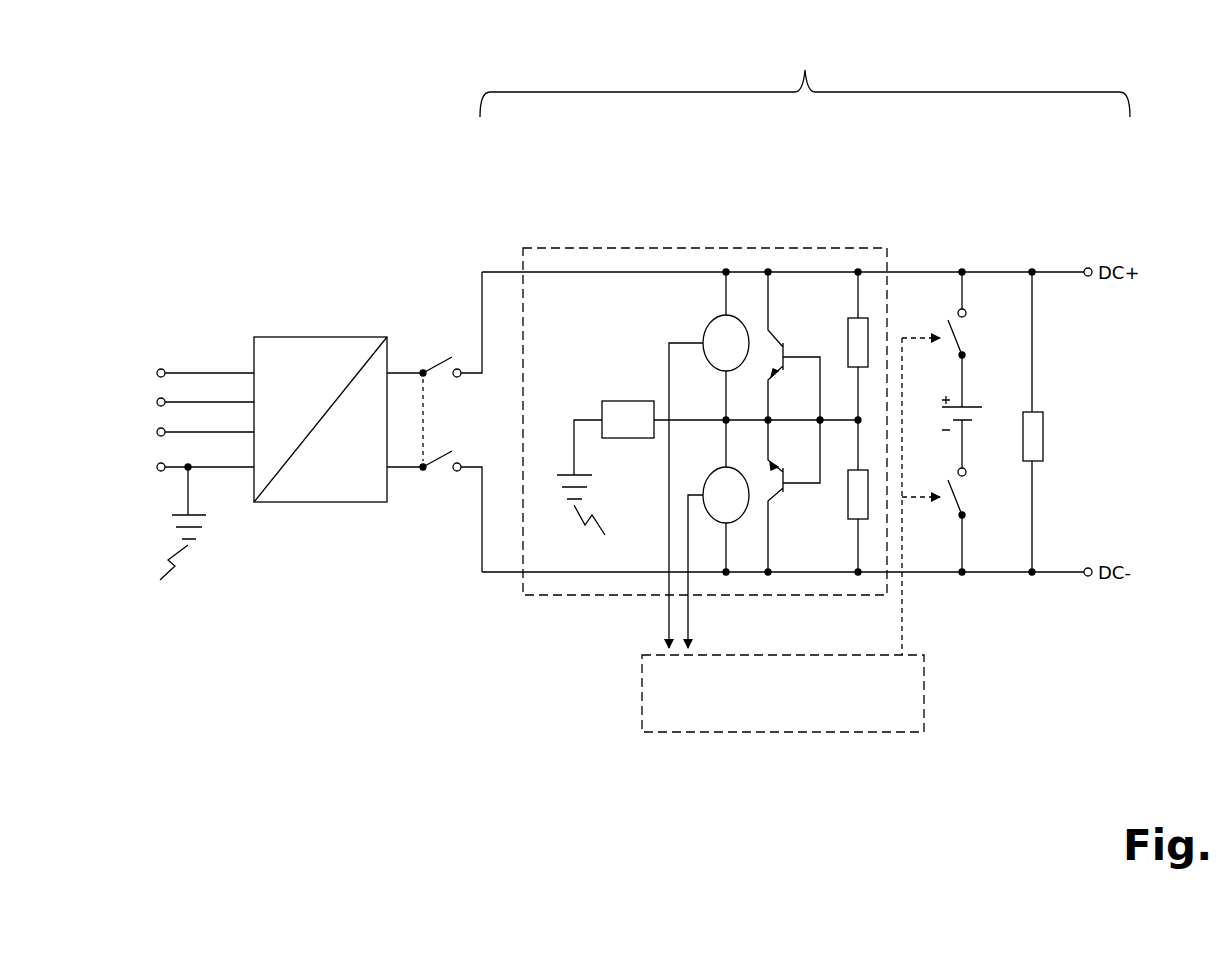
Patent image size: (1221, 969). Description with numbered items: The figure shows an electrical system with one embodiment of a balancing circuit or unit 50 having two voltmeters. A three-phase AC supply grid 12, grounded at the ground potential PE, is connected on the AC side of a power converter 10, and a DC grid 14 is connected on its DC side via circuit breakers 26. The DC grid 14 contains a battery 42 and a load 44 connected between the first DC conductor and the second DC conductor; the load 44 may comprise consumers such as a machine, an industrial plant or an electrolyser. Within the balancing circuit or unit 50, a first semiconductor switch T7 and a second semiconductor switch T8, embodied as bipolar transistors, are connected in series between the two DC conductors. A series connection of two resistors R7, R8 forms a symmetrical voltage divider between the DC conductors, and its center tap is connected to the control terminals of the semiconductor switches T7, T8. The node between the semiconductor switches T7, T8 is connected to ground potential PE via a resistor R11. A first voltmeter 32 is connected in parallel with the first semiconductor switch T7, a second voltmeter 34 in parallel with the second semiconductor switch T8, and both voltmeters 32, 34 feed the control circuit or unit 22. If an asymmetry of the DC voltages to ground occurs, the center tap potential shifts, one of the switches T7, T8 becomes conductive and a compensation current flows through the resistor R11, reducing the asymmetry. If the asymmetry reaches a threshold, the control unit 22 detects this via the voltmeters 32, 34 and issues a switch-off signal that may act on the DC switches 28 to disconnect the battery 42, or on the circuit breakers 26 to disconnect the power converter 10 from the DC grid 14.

The power converter 10 is at (318, 337).
The three-phase AC supply grid 12 is at (169, 328).
The DC grid 14 is at (805, 74).
The control circuit or unit 22 is at (783, 535).
The circuit breakers 26 is at (440, 355).
The DC switches 28 is at (964, 505).
The first voltmeter 32 is at (705, 328).
The second voltmeter 34 is at (711, 477).
The battery 42 is at (974, 407).
The load 44 is at (1045, 415).
The balancing circuit or unit 50 is at (705, 401).
The first semiconductor switch T7 is at (778, 345).
The second semiconductor switch T8 is at (783, 496).
The resistor R7 is at (848, 347).
The resistor R8 is at (849, 492).
The resistor R11 is at (628, 419).